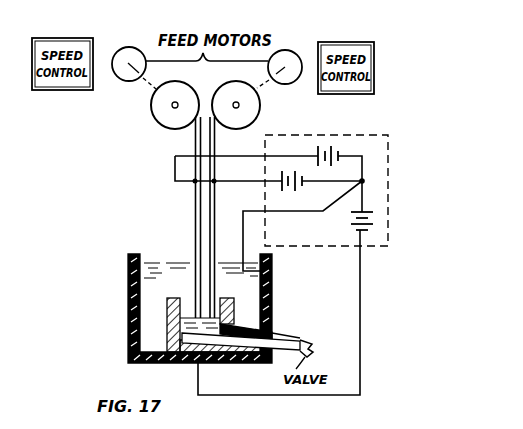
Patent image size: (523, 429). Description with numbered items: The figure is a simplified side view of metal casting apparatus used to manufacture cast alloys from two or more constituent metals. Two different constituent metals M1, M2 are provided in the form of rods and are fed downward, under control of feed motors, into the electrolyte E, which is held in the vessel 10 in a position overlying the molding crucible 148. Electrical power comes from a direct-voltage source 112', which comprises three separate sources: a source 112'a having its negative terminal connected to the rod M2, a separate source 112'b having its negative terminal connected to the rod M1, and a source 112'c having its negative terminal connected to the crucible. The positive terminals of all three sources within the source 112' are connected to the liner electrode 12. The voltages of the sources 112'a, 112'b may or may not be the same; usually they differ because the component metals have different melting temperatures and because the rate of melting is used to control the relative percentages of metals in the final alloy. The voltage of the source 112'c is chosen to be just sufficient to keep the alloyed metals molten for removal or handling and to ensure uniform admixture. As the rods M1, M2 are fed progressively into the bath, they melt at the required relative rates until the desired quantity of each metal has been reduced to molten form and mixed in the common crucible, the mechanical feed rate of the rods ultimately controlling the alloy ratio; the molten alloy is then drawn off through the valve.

The crucible 10 is at (128, 263).
The liner electrode 12 is at (141, 315).
The molding crucible 148 is at (177, 362).
The direct-voltage source 112' is at (349, 191).
The source 112'a is at (297, 191).
The source 112'b is at (357, 138).
The source 112'c is at (389, 241).
The constituent metal rod M1 is at (194, 140).
The constituent metal rod M2 is at (215, 143).
The electrolyte E is at (168, 287).